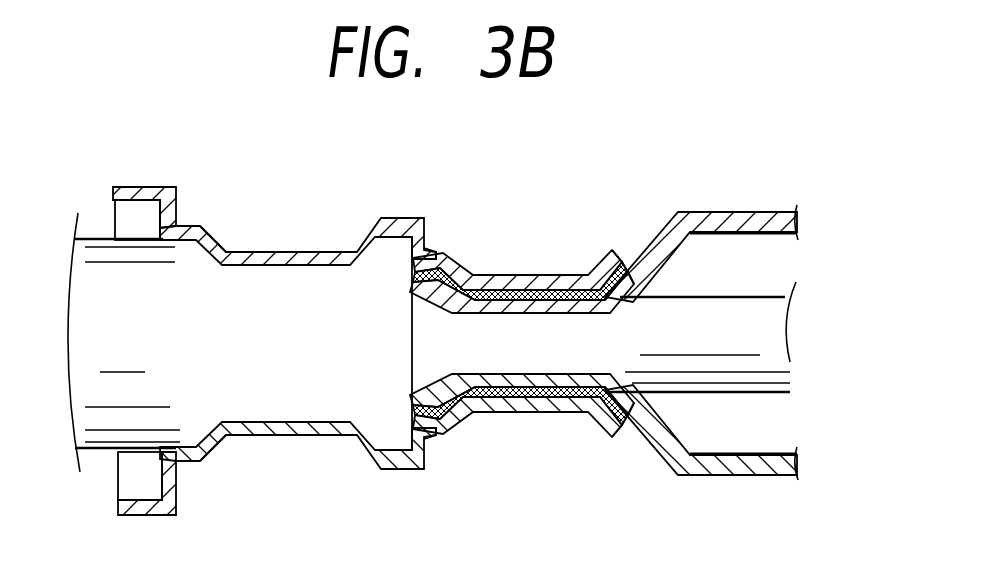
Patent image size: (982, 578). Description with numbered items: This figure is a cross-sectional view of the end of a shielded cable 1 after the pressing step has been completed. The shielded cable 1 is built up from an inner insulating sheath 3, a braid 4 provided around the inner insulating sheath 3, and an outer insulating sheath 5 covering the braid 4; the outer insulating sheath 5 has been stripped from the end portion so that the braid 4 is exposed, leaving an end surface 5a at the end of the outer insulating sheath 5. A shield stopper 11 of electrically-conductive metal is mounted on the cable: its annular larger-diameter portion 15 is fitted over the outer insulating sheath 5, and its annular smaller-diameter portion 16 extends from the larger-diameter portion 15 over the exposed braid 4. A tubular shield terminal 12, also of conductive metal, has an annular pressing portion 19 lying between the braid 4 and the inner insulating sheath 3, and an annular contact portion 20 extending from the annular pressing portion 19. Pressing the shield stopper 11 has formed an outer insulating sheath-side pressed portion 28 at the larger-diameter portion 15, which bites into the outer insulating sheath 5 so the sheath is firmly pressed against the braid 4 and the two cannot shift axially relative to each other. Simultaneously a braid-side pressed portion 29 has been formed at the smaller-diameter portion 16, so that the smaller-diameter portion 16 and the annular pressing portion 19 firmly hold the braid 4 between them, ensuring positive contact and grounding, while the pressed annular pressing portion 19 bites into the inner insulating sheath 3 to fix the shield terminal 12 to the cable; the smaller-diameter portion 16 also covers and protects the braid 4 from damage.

The shielded cable 1 is at (90, 468).
The inner insulating sheath 3 is at (763, 336).
The braid 4 is at (618, 258).
The outer insulating sheath 5 is at (95, 247).
The end surface 5a is at (440, 250).
The shield stopper 11 is at (398, 200).
The shield terminal 12 is at (724, 195).
The larger-diameter portion 15 is at (238, 250).
The smaller-diameter portion 16 is at (540, 275).
The annular pressing portion 19 is at (567, 300).
The annular contact portion 20 is at (768, 212).
The outer insulating sheath-side pressed portion 28 is at (313, 250).
The braid-side pressed portion 29 is at (490, 290).